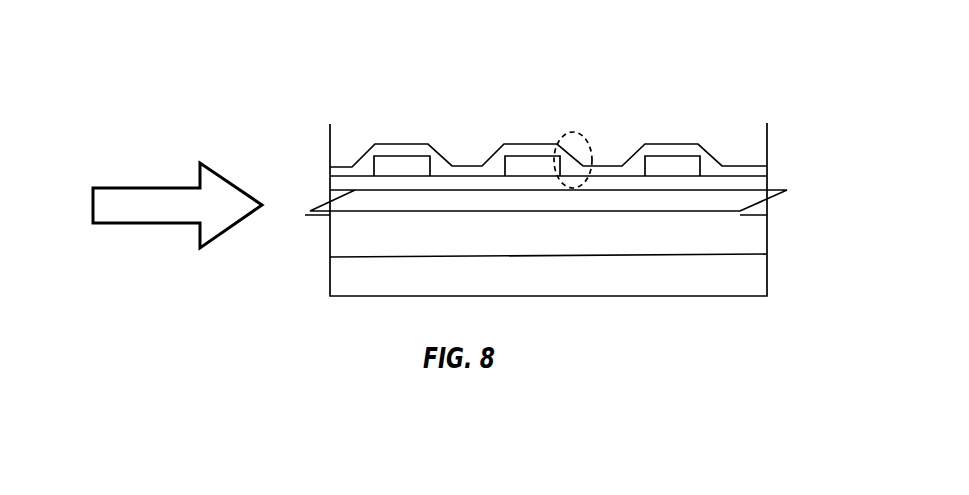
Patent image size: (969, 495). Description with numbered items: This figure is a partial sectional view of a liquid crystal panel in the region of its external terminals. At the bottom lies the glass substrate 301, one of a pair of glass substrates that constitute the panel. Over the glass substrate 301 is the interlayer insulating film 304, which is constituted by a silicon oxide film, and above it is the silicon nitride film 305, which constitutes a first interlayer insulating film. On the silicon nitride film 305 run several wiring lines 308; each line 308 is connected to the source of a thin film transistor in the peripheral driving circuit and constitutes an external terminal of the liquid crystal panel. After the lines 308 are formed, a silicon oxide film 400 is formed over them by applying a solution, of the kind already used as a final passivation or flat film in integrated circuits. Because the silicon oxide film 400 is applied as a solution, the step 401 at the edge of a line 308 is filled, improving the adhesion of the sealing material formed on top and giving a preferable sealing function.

The glass substrate 301 is at (628, 250).
The interlayer insulating film 304 is at (528, 204).
The silicon nitride film 305 is at (463, 187).
The line 308 is at (692, 158).
The silicon oxide film 400 is at (662, 147).
The step 401 is at (583, 137).